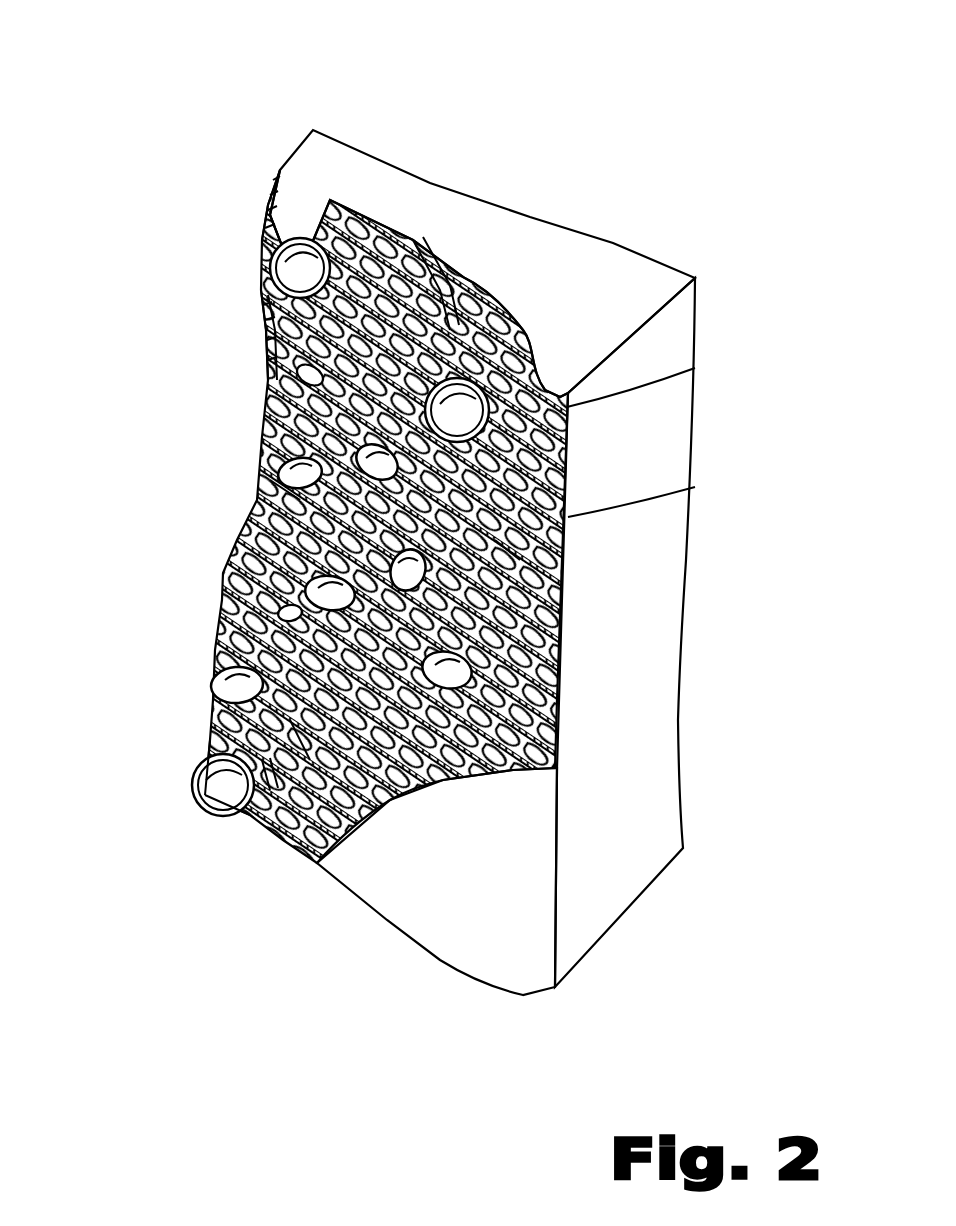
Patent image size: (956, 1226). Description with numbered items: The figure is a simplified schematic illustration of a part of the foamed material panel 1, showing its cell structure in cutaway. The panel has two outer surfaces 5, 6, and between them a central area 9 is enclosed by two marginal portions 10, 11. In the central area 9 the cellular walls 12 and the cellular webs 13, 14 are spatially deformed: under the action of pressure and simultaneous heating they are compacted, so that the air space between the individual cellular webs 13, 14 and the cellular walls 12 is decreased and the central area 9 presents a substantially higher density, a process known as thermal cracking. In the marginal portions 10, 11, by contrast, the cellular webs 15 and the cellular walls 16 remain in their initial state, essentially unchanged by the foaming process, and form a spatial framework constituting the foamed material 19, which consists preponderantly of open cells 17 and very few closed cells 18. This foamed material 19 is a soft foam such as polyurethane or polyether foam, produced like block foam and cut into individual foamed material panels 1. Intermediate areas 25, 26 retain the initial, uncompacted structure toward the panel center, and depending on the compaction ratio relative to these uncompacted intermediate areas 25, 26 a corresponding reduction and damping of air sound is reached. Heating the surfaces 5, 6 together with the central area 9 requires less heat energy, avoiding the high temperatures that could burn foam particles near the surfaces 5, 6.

The foamed material panel 1 is at (712, 128).
The surface 5 is at (574, 275).
The surface 6 is at (387, 920).
The central area 9 is at (238, 447).
The marginal portion 10 is at (240, 245).
The marginal portion 11 is at (177, 787).
The cellular wall 12 is at (303, 375).
The cellular web 13 is at (297, 440).
The cellular web 14 is at (273, 483).
The cellular web 15 is at (437, 325).
The cellular wall 16 is at (297, 262).
The open cell 17 is at (283, 733).
The closed cell 18 is at (183, 813).
The foamed material 19 is at (511, 542).
The intermediate area 25 is at (237, 280).
The intermediate area 26 is at (195, 688).